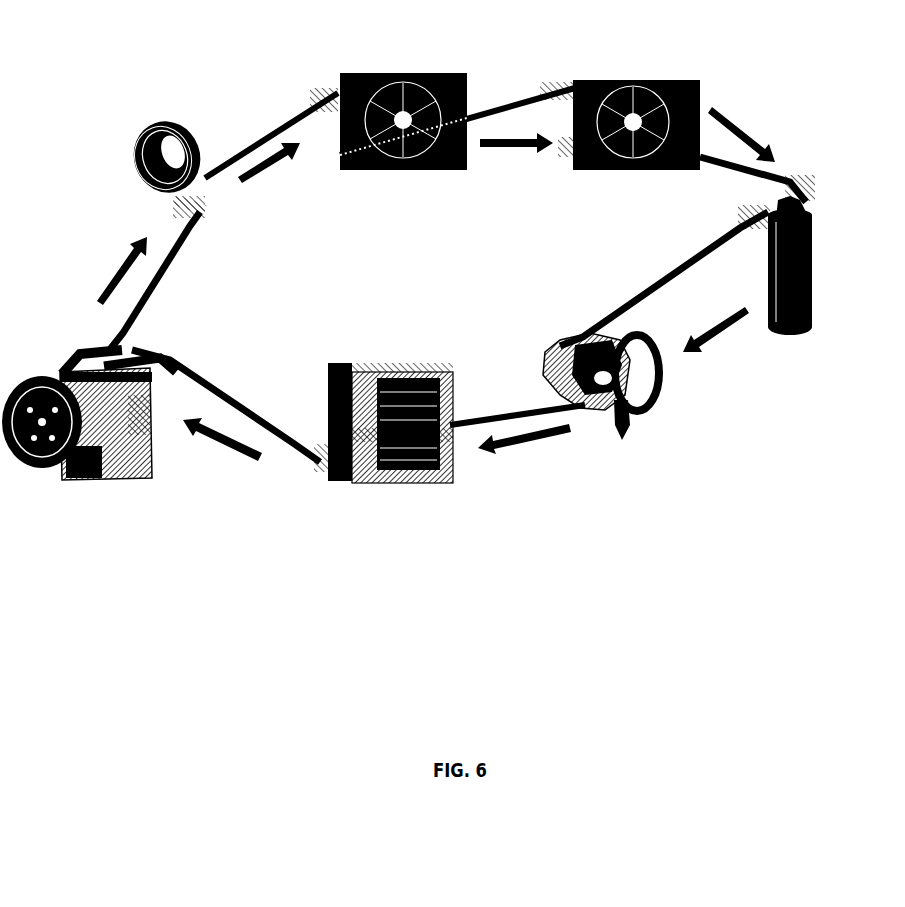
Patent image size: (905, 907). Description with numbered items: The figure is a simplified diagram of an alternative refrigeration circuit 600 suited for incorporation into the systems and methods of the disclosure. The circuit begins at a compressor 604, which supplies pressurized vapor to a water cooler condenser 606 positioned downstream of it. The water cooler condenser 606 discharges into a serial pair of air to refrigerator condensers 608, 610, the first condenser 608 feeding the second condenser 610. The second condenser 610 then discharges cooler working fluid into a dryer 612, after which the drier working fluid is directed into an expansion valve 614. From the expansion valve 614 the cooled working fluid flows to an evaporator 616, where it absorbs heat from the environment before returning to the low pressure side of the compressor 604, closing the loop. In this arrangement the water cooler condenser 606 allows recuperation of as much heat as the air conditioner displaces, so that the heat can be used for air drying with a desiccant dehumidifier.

The refrigeration circuit 600 is at (456, 365).
The compressor 604 is at (122, 462).
The water cooler condenser 606 is at (142, 165).
The air to refrigerator condenser 608 is at (417, 172).
The second condenser 610 is at (630, 170).
The dryer 612 is at (777, 333).
The expansion valve 614 is at (653, 397).
The evaporator 616 is at (453, 473).